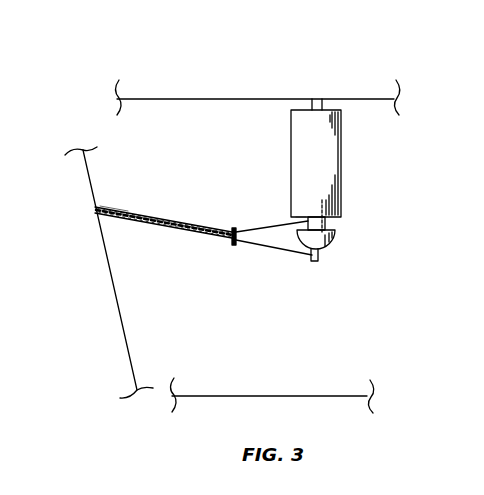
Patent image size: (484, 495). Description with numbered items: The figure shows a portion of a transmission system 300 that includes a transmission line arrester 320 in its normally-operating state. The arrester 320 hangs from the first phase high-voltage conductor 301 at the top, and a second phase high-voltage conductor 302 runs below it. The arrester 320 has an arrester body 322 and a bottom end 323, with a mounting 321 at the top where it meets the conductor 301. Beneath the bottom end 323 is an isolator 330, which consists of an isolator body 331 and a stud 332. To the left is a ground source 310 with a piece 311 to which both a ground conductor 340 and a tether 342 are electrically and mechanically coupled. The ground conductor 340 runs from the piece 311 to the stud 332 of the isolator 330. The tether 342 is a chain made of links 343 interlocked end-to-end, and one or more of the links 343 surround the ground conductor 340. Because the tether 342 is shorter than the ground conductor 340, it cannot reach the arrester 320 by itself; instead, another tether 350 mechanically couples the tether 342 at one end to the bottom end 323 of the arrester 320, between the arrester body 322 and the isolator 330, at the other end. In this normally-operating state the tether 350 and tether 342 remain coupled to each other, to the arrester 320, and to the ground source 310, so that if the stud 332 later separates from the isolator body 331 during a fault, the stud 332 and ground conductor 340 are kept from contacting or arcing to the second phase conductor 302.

The transmission system 300 is at (82, 55).
The first phase high-voltage conductor 301 is at (190, 98).
The second phase high-voltage conductor 302 is at (228, 396).
The ground source 310 is at (97, 257).
The piece of the ground source 311 is at (112, 292).
The transmission line arrester 320 is at (401, 190).
The mounting stem 321 is at (322, 106).
The arrester body 322 is at (291, 142).
The bottom end of the arrester 323 is at (326, 226).
The isolator 330 is at (339, 259).
The isolator body 331 is at (336, 238).
The stud 332 is at (314, 261).
The ground conductor 340 is at (186, 238).
The tether 342 is at (156, 207).
The links 343 is at (127, 212).
The tether 350 is at (285, 215).